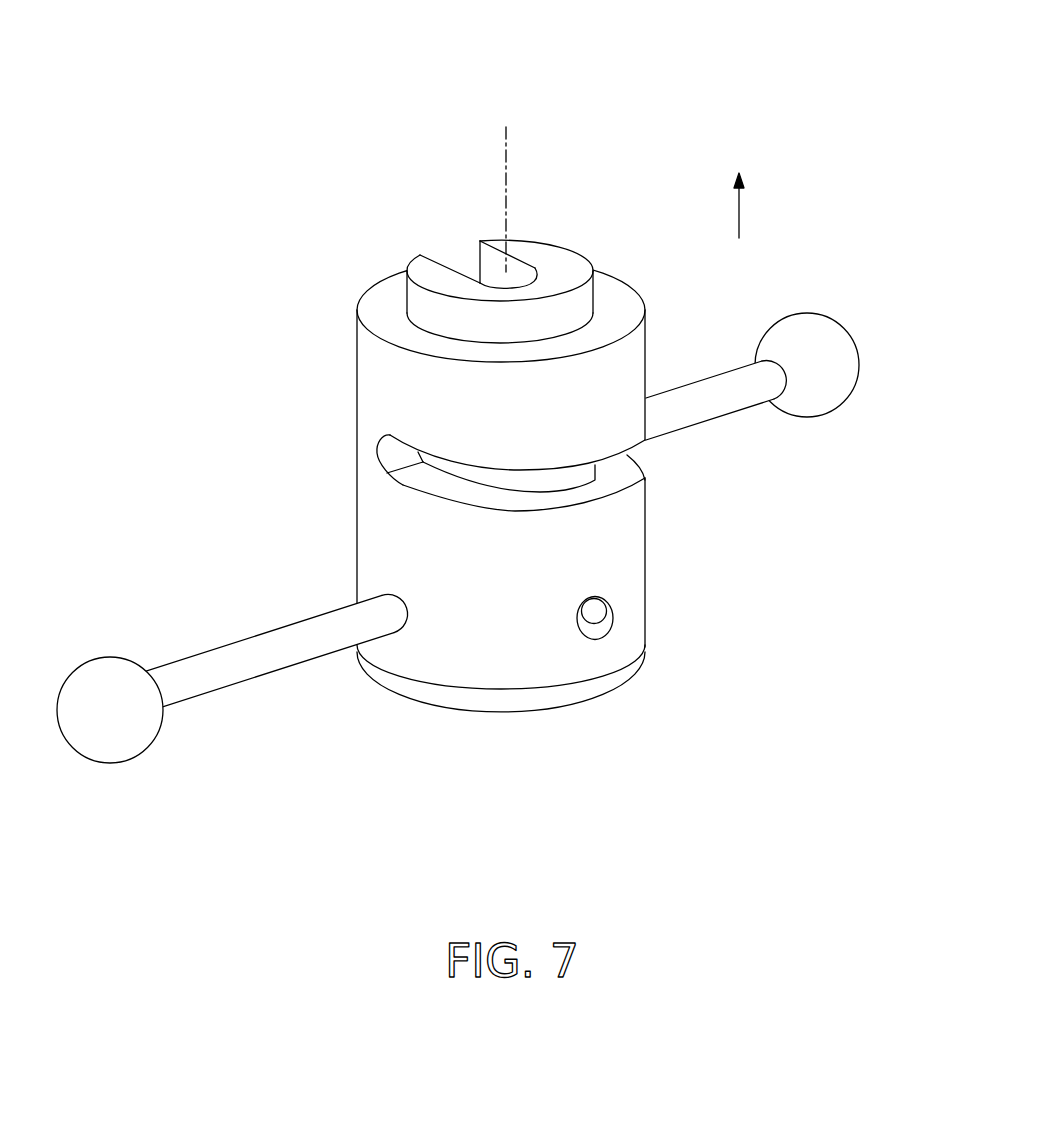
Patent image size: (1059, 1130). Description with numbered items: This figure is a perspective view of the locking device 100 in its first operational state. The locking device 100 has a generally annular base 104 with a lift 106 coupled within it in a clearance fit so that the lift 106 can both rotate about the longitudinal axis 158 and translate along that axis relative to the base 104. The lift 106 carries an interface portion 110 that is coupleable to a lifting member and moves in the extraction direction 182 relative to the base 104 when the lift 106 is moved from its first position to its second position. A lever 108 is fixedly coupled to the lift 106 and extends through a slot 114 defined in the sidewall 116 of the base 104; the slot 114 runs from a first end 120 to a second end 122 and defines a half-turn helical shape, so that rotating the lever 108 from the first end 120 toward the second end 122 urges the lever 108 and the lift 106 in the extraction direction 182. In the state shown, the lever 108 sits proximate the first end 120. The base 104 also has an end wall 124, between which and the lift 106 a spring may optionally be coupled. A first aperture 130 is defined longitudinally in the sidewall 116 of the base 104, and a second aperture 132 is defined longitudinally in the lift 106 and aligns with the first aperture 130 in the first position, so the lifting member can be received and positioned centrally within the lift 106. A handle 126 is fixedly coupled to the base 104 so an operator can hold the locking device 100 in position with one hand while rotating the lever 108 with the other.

The locking device 100 is at (464, 386).
The base 104 is at (557, 603).
The lift 106 is at (461, 408).
The lever 108 is at (800, 328).
The interface portion 110 is at (541, 253).
The slot 114 is at (425, 494).
The sidewall 116 is at (638, 607).
The first end 120 is at (511, 480).
The second end 122 is at (380, 452).
The end wall 124 is at (613, 688).
The handle 126 is at (94, 672).
The first aperture 130 is at (380, 265).
The second aperture 132 is at (446, 250).
The longitudinal axis 158 is at (507, 148).
The extraction direction 182 is at (741, 212).